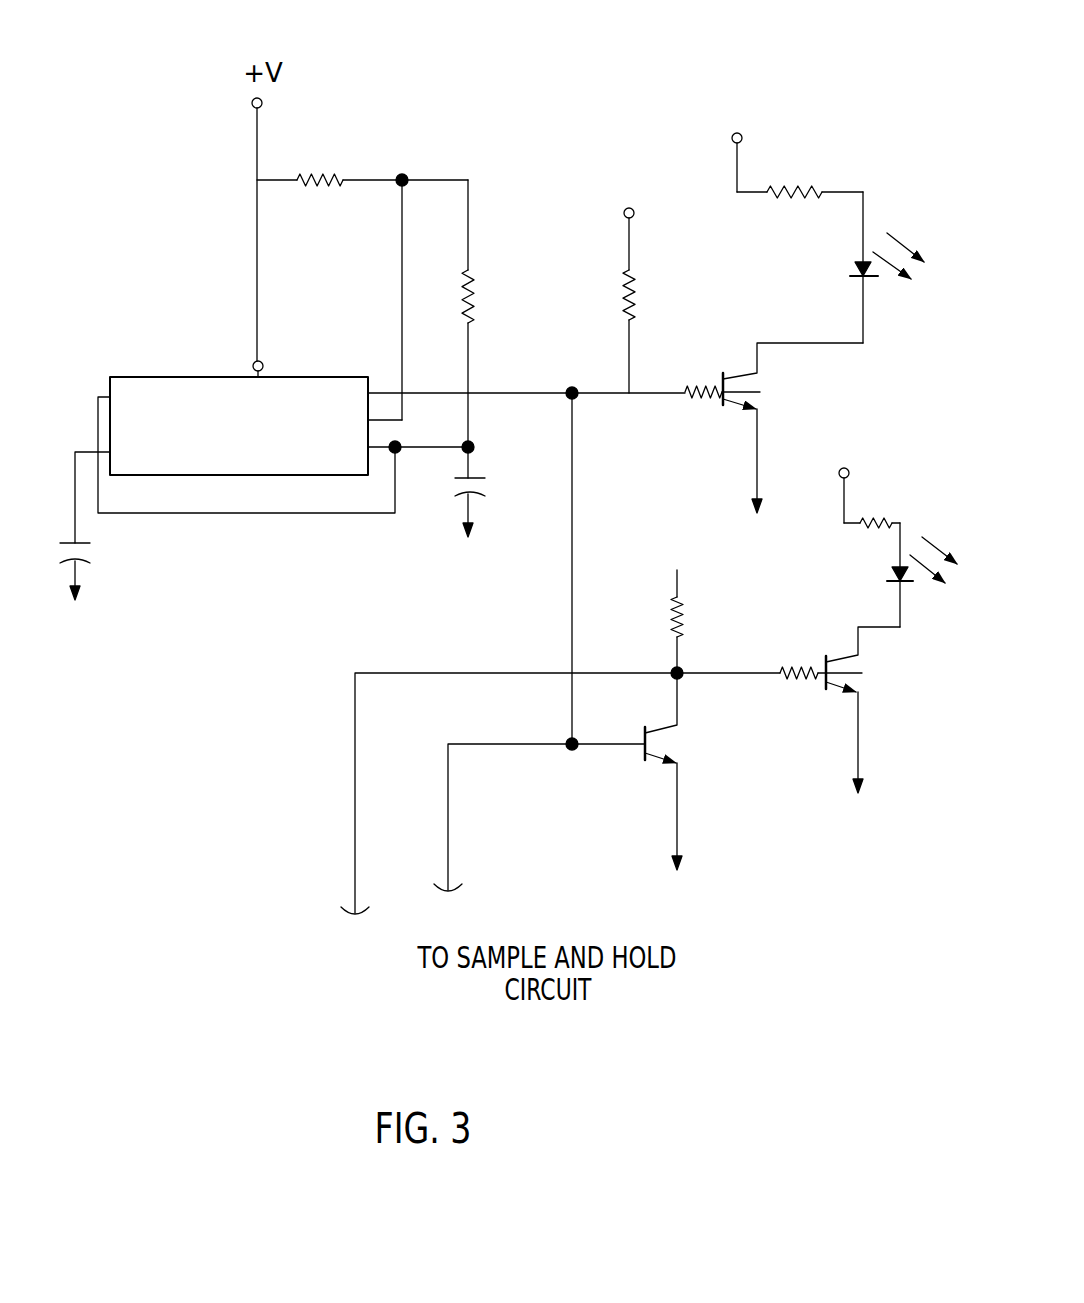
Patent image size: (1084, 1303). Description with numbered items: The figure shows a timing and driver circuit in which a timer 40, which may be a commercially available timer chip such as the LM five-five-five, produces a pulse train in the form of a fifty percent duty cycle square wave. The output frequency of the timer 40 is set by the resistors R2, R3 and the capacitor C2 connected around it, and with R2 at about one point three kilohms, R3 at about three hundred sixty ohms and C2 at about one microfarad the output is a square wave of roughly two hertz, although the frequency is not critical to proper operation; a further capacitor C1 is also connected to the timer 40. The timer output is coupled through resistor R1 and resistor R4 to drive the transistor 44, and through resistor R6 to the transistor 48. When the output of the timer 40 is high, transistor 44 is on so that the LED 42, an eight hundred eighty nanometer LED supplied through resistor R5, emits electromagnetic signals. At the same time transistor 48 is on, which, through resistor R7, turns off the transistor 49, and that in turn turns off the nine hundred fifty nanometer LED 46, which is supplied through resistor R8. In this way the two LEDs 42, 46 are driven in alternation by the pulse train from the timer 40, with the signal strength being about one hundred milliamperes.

The timer 40 is at (182, 388).
The LED 42 is at (858, 268).
The transistor 44 is at (720, 383).
The LED 46 is at (893, 578).
The transistor 48 is at (638, 755).
The transistor 49 is at (822, 681).
The resistor R1 is at (615, 281).
The resistor R2 is at (362, 164).
The resistor R3 is at (488, 313).
The resistor R4 is at (706, 409).
The resistor R5 is at (791, 139).
The resistor R6 is at (663, 600).
The resistor R7 is at (805, 654).
The resistor R8 is at (861, 477).
The capacitor C1 is at (96, 526).
The capacitor C2 is at (497, 492).